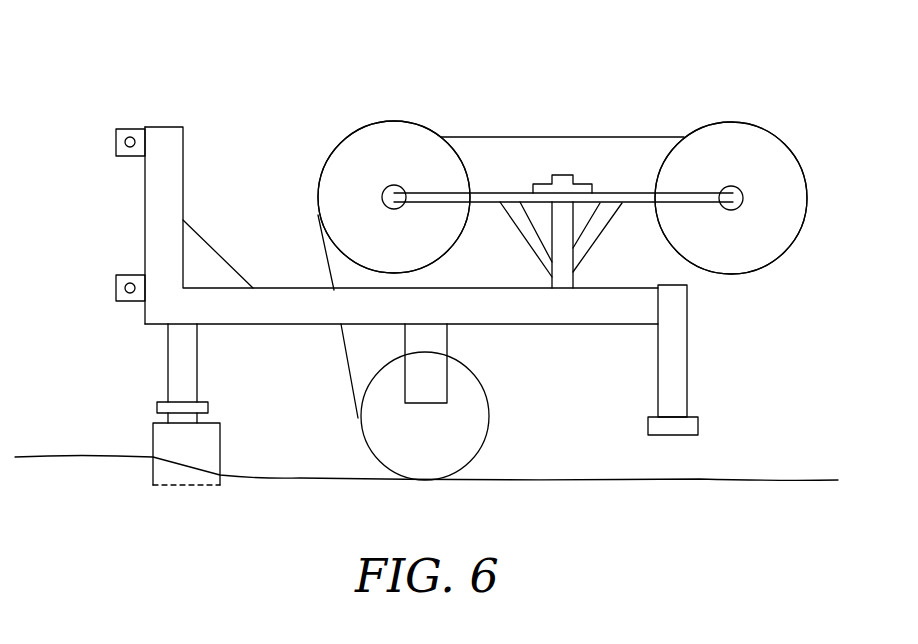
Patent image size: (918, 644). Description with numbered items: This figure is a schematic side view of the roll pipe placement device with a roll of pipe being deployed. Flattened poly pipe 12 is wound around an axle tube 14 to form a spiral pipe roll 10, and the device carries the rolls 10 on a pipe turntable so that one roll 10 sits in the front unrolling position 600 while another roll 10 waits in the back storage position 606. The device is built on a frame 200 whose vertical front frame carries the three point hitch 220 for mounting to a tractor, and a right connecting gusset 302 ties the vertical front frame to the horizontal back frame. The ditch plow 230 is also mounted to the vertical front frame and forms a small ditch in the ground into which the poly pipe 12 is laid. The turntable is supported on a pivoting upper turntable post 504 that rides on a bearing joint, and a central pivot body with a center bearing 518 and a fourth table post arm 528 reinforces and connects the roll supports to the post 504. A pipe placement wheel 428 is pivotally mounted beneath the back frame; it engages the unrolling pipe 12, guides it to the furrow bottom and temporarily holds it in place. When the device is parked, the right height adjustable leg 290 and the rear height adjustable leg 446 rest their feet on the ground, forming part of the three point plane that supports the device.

The spiral pipe roll 10 is at (372, 127).
The poly pipe 12 is at (727, 480).
The axle tube 14 is at (384, 197).
The frame 200 is at (145, 226).
The three point hitch 220 is at (126, 128).
The ditch plow 230 is at (153, 430).
The right height adjustable leg 290 is at (208, 407).
The right connecting gusset 302 is at (215, 250).
The pipe placement wheel 428 is at (492, 418).
The rear height adjustable leg 446 is at (687, 370).
The upper turntable post 504 is at (575, 270).
The center bearing 518 is at (547, 137).
The fourth table post arm 528 is at (603, 137).
The front unrolling position 600 is at (396, 122).
The back storage position 606 is at (732, 122).